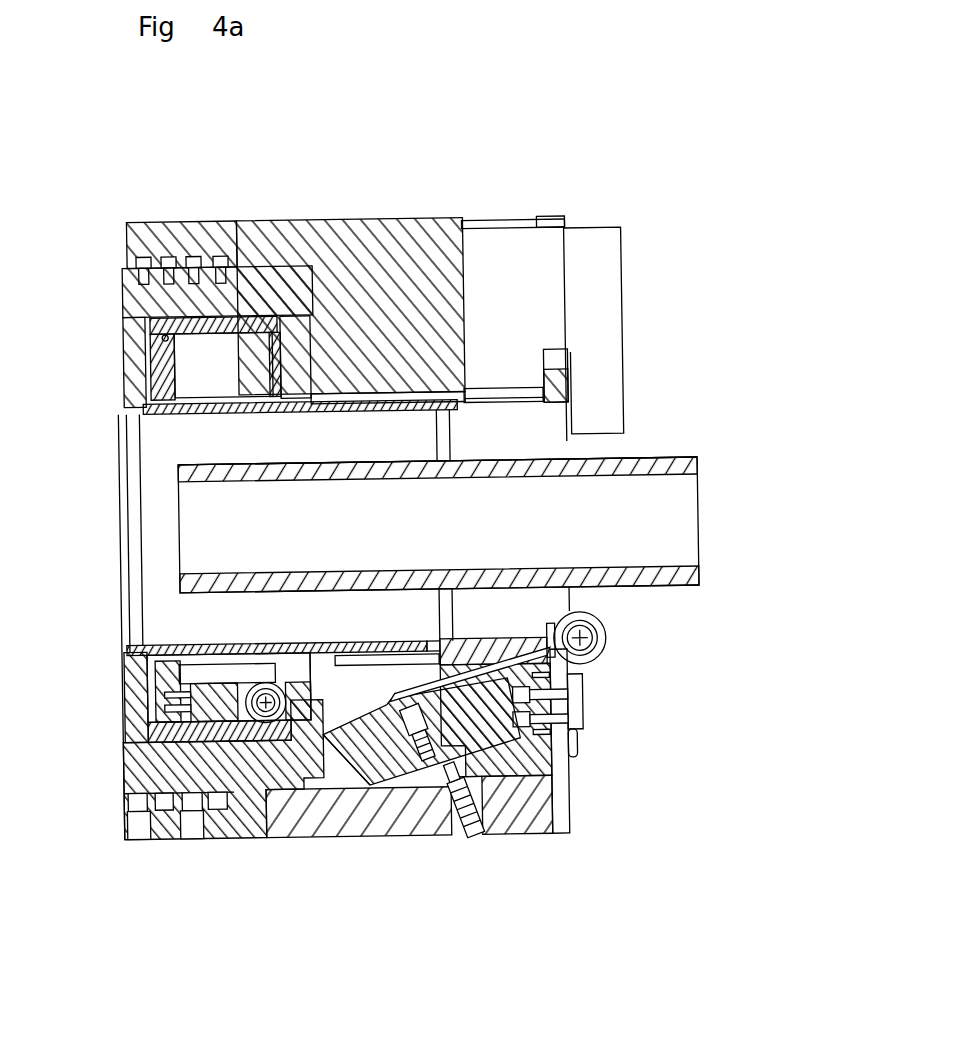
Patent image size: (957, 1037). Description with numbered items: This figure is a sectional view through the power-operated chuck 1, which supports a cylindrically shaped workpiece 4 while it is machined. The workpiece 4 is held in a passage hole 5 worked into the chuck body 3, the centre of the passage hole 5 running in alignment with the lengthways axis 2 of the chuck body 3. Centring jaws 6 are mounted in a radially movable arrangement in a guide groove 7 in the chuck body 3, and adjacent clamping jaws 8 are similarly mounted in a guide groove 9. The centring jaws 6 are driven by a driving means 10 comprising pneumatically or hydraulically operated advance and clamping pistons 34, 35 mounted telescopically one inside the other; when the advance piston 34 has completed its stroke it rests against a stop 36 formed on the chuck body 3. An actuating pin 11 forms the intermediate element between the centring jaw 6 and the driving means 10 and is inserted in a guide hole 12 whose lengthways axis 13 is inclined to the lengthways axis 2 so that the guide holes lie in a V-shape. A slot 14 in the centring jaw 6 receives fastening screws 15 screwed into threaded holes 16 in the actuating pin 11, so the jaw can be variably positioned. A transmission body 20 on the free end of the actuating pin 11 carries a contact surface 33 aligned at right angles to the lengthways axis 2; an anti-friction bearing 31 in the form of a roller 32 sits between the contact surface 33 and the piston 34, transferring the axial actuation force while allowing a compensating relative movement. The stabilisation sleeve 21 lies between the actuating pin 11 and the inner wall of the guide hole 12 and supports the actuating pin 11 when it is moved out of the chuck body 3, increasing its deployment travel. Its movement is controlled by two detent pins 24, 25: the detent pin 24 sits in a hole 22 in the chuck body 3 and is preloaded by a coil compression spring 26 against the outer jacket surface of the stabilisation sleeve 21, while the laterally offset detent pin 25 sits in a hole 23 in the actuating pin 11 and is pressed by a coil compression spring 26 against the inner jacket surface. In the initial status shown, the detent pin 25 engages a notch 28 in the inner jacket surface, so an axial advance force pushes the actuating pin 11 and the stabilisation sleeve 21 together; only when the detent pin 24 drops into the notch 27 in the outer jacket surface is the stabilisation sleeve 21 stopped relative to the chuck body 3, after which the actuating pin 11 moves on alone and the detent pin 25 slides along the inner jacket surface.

The power-operated chuck 1 is at (468, 119).
The lengthways axis 2 is at (680, 515).
The chuck body 3 is at (115, 746).
The workpiece 4 is at (681, 458).
The passage hole 5 is at (160, 642).
The centring jaws 6 is at (580, 751).
The guide groove 7 is at (564, 766).
The clamping jaws 8 is at (602, 279).
The guide groove 9 is at (517, 222).
The driving means 10 is at (221, 313).
The actuating pin 11 is at (344, 755).
The guide hole 12 is at (558, 831).
The lengthways axis of the guide hole 13 is at (376, 767).
The slot 14 is at (579, 734).
The fastening screws 15 is at (575, 719).
The threaded holes 16 is at (577, 701).
The transmission body 20 is at (246, 806).
The stabilisation sleeve 21 is at (396, 736).
The hole 22 is at (453, 761).
The hole 23 is at (408, 749).
The detent pin 24 is at (473, 789).
The detent pin 25 is at (605, 635).
The coil compression spring 26 is at (416, 741).
The notch 27 is at (445, 774).
The notch 28 is at (592, 614).
The anti-friction bearing 31 is at (129, 791).
The roller 32 is at (138, 833).
The contact surface 33 is at (192, 832).
The advance piston 34 is at (152, 727).
The clamping piston 35 is at (154, 685).
The stop 36 is at (307, 372).